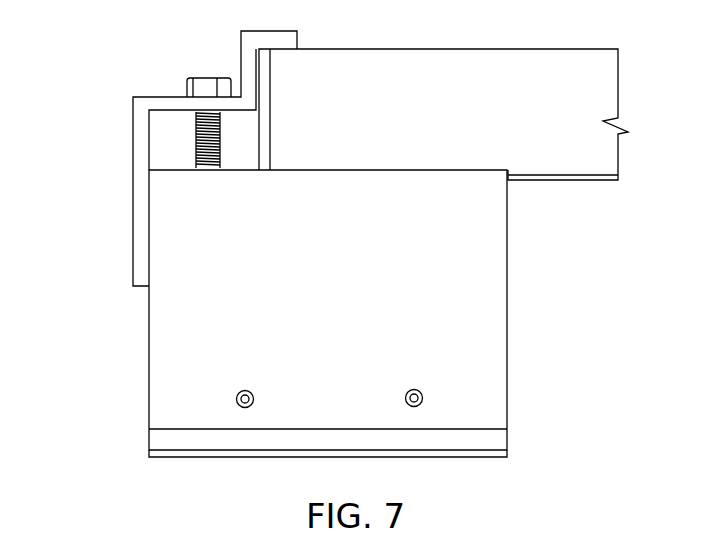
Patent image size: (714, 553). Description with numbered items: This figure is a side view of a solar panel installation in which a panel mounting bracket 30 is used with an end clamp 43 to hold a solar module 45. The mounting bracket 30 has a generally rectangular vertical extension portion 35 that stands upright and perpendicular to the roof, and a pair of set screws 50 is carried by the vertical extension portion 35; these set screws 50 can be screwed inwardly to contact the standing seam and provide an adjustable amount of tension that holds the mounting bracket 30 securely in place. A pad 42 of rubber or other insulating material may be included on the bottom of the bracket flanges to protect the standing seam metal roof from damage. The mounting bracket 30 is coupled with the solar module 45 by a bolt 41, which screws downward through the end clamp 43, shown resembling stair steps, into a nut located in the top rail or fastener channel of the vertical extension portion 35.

The panel mounting bracket 30 is at (98, 322).
The vertical extension portion 35 is at (508, 290).
The bolt 41 is at (202, 78).
The pad 42 is at (463, 457).
The end clamp 43 is at (285, 31).
The solar module 45 is at (527, 49).
The set screw 50 is at (422, 395).